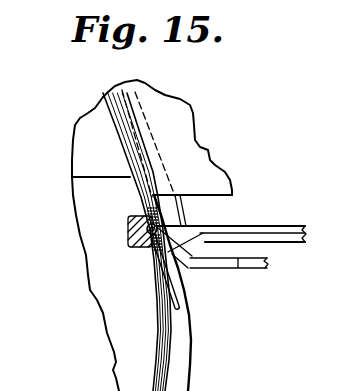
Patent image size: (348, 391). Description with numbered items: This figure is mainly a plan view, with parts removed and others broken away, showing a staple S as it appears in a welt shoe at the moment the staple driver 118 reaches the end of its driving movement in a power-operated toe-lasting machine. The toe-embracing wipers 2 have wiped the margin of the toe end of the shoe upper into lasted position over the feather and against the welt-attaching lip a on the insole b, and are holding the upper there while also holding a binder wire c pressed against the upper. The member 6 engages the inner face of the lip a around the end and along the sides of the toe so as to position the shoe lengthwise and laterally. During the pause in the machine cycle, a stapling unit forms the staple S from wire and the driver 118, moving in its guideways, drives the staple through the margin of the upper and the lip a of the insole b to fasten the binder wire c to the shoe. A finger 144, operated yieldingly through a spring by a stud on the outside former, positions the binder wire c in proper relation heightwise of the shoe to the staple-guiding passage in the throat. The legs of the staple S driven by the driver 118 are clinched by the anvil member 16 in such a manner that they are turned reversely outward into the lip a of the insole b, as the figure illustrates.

The toe-embracing wipers 2 is at (192, 136).
The member 6 is at (118, 133).
The anvil member 16 is at (129, 235).
The finger 144 is at (203, 232).
The staple driver 118 is at (280, 227).
The welt-attaching lip a is at (140, 190).
The insole b is at (145, 347).
The binder wire c is at (190, 299).
The staple S is at (137, 247).